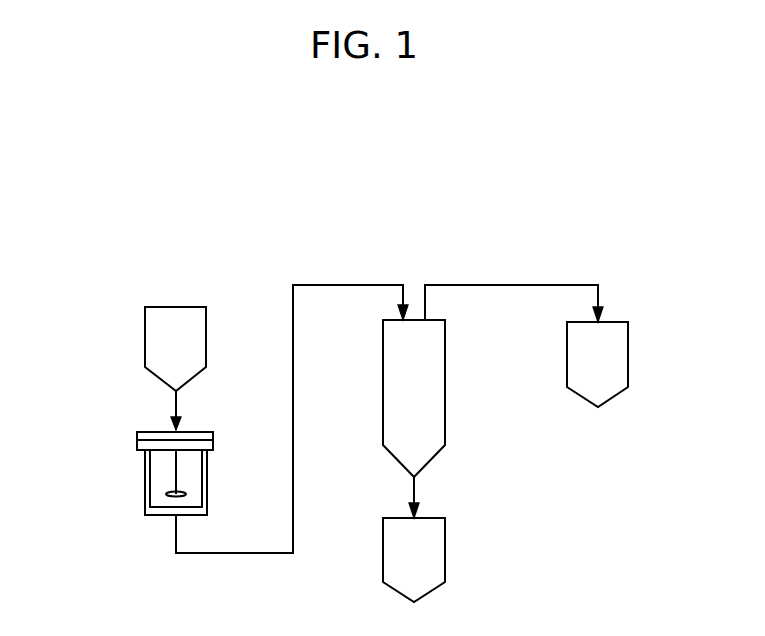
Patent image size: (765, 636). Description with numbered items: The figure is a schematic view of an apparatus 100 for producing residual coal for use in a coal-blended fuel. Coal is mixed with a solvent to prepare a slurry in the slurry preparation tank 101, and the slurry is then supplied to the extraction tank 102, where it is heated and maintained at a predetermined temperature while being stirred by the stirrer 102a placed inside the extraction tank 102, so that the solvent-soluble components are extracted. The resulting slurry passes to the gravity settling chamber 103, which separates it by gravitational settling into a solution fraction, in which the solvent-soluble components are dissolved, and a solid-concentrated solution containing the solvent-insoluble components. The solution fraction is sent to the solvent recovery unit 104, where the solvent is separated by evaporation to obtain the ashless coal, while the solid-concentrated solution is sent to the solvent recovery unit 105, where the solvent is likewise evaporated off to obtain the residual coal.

The apparatus 100 is at (145, 247).
The slurry preparation tank 101 is at (150, 340).
The extraction tank 102 is at (158, 435).
The stirrer 102a is at (170, 493).
The gravity settling chamber 103 is at (393, 365).
The solvent recovery unit 104 is at (622, 352).
The solvent recovery unit 105 is at (393, 548).